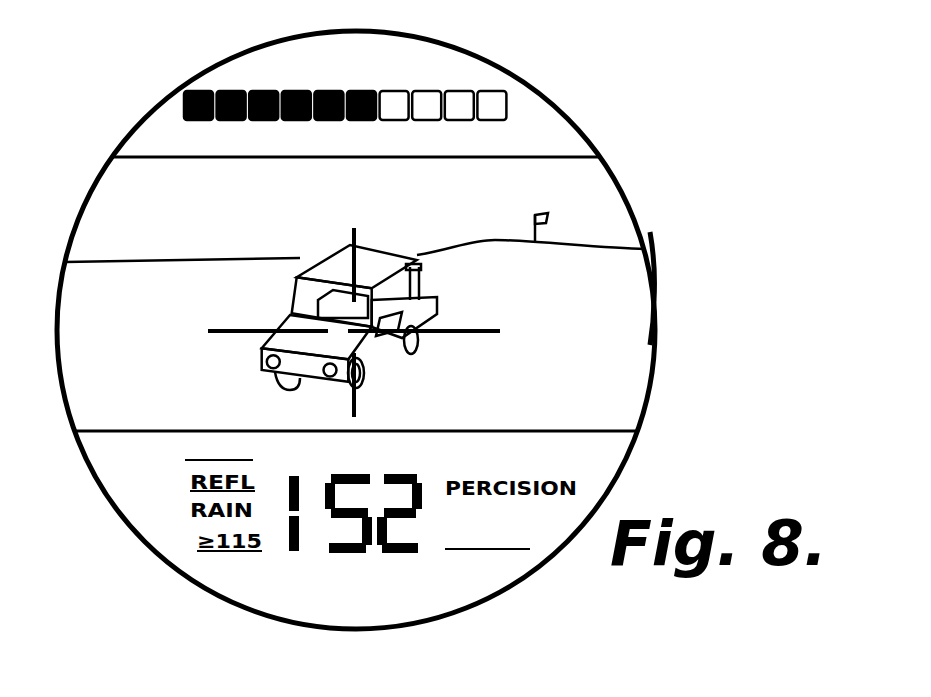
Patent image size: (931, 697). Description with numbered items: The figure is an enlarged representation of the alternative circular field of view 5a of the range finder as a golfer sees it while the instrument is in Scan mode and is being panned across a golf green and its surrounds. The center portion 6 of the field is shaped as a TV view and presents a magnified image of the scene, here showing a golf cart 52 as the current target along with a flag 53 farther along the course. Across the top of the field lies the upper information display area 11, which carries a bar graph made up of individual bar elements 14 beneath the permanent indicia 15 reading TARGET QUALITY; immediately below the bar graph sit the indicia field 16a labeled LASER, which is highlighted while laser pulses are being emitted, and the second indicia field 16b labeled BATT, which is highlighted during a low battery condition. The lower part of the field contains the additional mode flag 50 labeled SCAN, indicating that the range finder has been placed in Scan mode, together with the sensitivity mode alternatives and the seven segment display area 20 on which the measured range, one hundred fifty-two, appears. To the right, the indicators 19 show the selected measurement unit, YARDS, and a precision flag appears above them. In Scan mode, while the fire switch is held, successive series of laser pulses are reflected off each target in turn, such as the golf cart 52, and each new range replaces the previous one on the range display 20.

The upper information display area 11 is at (356, 330).
The permanent indicia 15 is at (345, 64).
The indicia field 16a is at (213, 148).
The second indicia field 16b is at (512, 145).
The bar elements 14 is at (356, 176).
The golf cart 52 is at (373, 260).
The flag 53 is at (532, 226).
The alternative circular field of view 5a is at (712, 185).
The center portion 6 is at (643, 322).
The mode flag 50 is at (203, 433).
The seven segment display area 20 is at (377, 455).
The indicators 19 is at (535, 540).